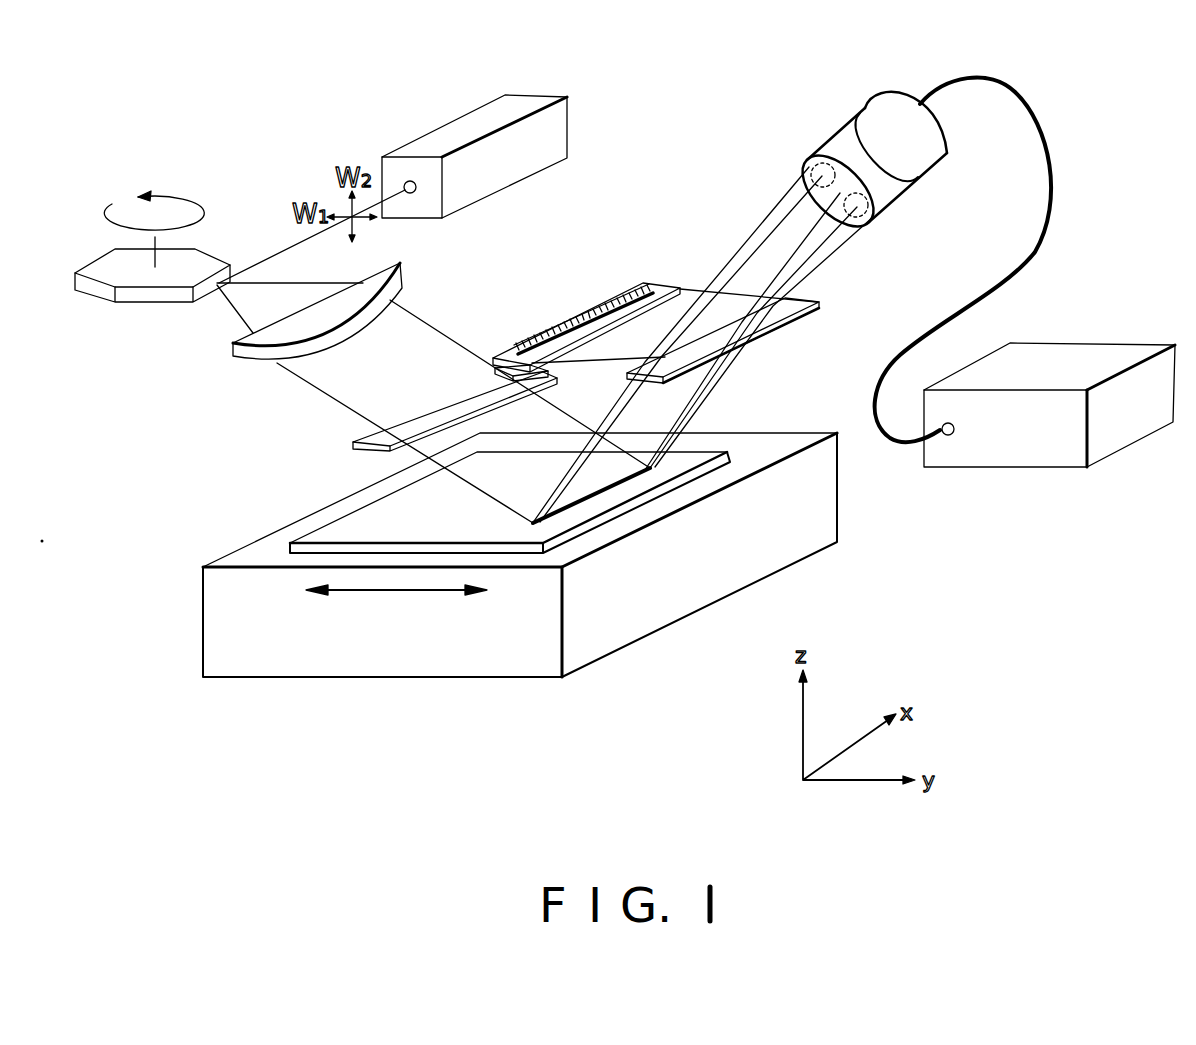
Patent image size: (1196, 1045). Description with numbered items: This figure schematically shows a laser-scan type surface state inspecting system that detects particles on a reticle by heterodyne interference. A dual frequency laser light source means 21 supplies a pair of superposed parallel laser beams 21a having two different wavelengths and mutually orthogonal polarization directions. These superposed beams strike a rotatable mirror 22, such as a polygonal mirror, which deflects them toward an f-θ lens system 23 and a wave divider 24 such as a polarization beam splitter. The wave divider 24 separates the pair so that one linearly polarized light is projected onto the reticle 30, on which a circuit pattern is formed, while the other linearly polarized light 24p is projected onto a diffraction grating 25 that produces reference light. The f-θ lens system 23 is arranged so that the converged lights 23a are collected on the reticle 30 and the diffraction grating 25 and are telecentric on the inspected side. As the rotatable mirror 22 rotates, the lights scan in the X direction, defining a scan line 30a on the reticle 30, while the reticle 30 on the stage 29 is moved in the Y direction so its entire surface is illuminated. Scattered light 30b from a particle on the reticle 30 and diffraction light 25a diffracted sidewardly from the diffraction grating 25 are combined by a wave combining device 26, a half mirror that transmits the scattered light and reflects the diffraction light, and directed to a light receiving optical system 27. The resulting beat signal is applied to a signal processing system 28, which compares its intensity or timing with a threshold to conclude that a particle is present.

The dual frequency laser light source means 21 is at (568, 120).
The laser beam 21a is at (263, 260).
The rotatable mirror 22 is at (140, 302).
The f-θ lens system 23 is at (400, 263).
The beam from lens 23a is at (322, 391).
The wave divider 24 is at (352, 449).
The linearly polarized light 24p is at (486, 377).
The diffraction grating 25 is at (615, 300).
The diffraction light 25a is at (697, 297).
The wave combining device 26 is at (815, 303).
The light receiving optical system 27 is at (894, 182).
The signal processing system 28 is at (1027, 468).
The stage 29 is at (640, 632).
The reticle 30 is at (650, 497).
The scan line 30a is at (583, 503).
The scattered light 30b is at (723, 390).